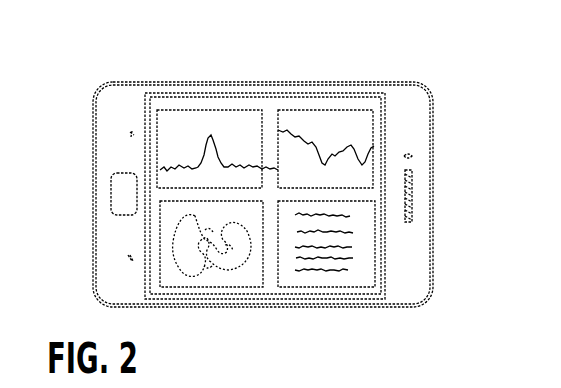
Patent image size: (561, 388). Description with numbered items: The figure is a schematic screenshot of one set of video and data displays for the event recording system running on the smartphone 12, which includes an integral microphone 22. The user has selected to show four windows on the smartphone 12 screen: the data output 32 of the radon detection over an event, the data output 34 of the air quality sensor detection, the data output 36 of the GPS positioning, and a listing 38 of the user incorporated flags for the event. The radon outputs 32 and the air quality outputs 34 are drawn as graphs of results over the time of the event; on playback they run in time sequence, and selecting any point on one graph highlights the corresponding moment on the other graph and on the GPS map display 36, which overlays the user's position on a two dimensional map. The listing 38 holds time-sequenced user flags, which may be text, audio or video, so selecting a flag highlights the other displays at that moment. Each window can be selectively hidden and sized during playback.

The smartphone 12 is at (93, 160).
The microphone 22 is at (110, 197).
The data output of the radon detection 32 is at (198, 115).
The data output of the air quality sensor detection 34 is at (308, 116).
The GPS map display 36 is at (210, 289).
The listing of user incorporated flags 38 is at (375, 252).